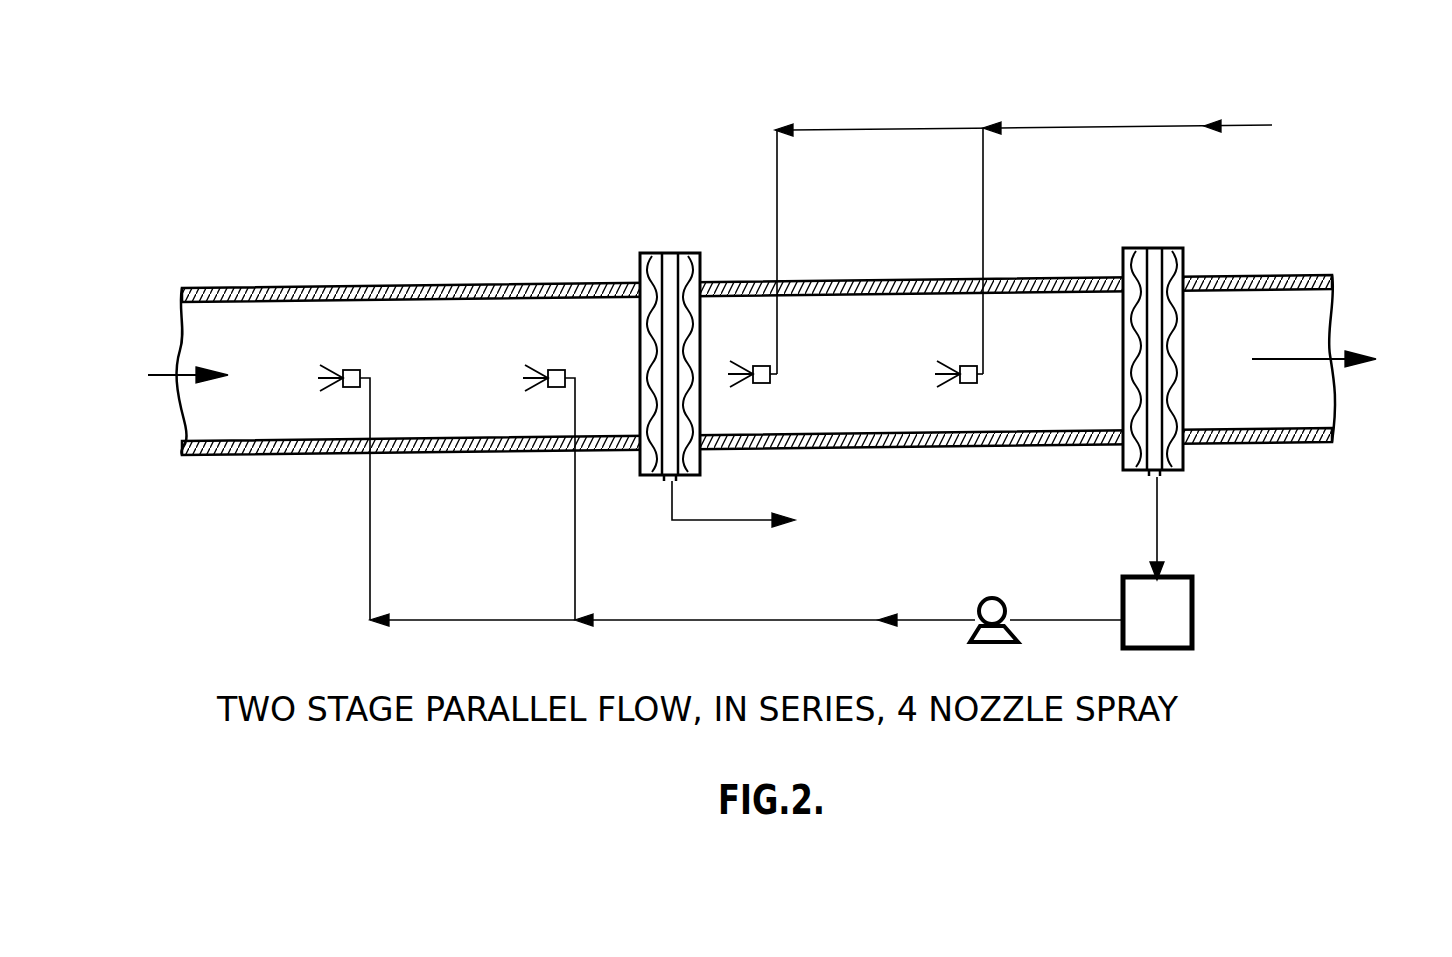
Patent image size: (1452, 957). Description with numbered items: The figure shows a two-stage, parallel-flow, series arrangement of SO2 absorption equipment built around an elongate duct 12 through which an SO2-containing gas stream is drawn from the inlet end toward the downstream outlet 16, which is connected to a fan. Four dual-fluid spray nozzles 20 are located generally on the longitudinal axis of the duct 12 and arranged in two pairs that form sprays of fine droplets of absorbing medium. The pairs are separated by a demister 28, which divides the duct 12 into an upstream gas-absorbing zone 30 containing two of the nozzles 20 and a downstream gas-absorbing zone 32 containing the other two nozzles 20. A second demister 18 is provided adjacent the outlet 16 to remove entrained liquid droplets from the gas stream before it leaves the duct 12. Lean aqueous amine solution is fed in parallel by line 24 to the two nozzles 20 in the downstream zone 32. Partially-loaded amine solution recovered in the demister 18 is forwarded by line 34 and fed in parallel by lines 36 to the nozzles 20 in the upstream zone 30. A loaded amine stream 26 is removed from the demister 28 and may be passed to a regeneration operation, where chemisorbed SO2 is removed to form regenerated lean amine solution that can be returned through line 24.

The duct 12 is at (540, 280).
The outlet 16 is at (1300, 276).
The demister 18 is at (1176, 250).
The dual-fluid spray nozzles 20 is at (352, 370).
The line 24 is at (1049, 128).
The loaded amine stream 26 is at (725, 520).
The demister 28 is at (655, 253).
The upstream gas-absorbing zone 30 is at (275, 330).
The downstream gas-absorbing zone 32 is at (900, 405).
The line 34 is at (715, 620).
The lines 36 is at (370, 530).